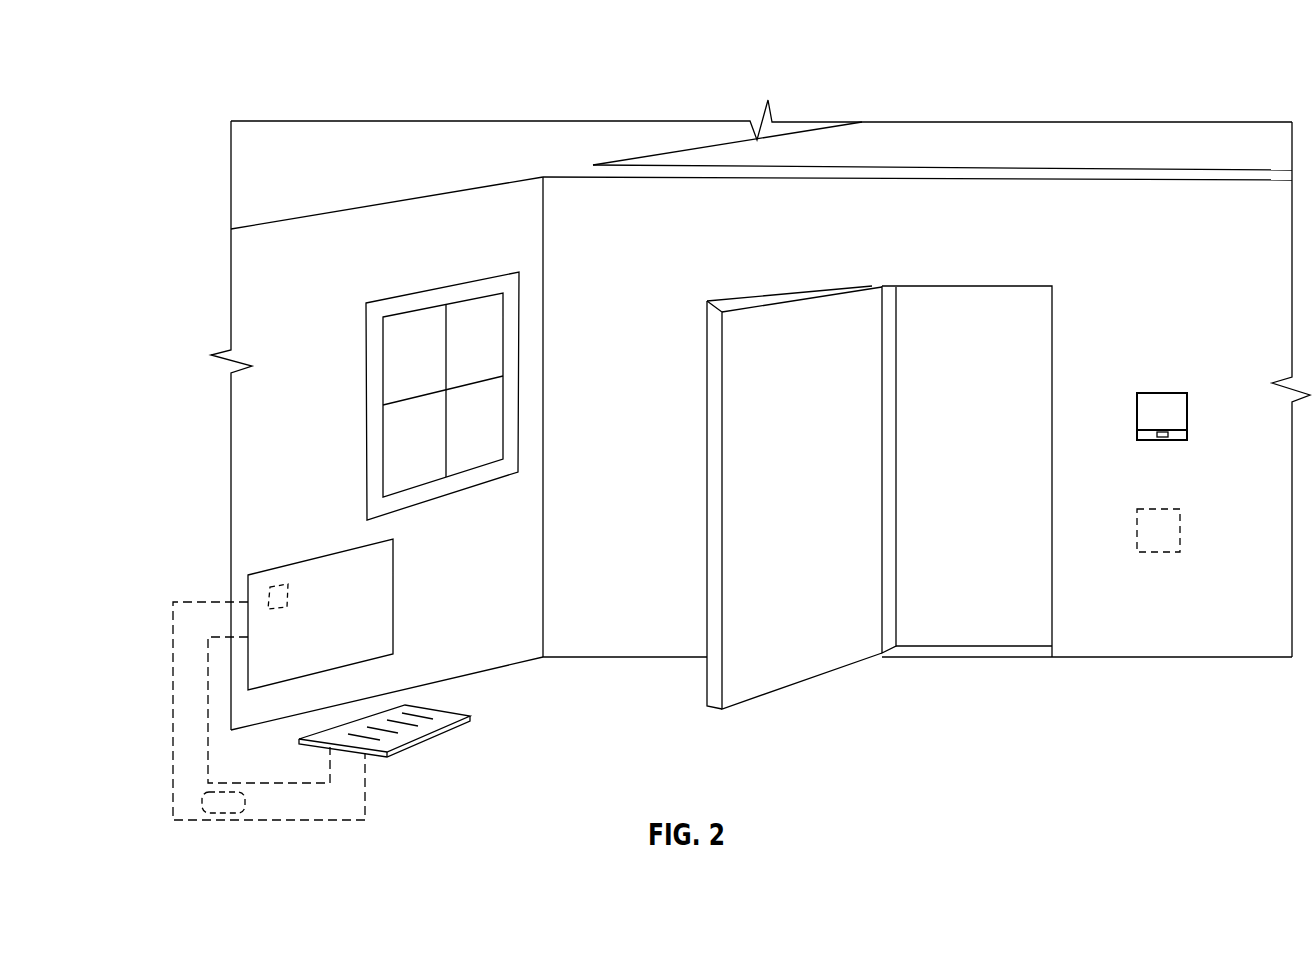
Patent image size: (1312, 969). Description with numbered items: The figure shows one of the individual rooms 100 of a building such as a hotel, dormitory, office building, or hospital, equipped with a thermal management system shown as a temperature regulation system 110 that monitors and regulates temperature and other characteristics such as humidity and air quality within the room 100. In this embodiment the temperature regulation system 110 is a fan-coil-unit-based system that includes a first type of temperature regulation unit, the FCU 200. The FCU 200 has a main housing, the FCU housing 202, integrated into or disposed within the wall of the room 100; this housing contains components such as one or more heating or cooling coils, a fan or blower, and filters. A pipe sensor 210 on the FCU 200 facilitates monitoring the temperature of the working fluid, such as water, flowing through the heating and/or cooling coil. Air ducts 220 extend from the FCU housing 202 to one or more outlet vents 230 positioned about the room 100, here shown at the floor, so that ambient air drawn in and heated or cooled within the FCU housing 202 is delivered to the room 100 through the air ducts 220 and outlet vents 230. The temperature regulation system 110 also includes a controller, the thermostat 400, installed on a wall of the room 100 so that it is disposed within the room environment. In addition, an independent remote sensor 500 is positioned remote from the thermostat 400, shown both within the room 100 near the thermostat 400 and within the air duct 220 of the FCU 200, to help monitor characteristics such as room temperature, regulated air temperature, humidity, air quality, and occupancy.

The room 100 is at (203, 101).
The temperature regulation system 110 is at (326, 514).
The FCU 200 is at (677, 687).
The FCU housing 202 is at (393, 596).
The pipe sensor 210 is at (276, 589).
The air ducts 220 is at (173, 670).
The outlet vents 230 is at (427, 737).
The thermostat 400 is at (1171, 388).
The remote sensor 500 is at (222, 803).